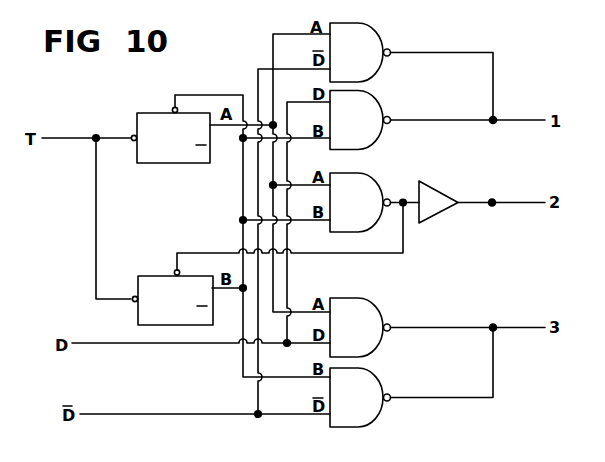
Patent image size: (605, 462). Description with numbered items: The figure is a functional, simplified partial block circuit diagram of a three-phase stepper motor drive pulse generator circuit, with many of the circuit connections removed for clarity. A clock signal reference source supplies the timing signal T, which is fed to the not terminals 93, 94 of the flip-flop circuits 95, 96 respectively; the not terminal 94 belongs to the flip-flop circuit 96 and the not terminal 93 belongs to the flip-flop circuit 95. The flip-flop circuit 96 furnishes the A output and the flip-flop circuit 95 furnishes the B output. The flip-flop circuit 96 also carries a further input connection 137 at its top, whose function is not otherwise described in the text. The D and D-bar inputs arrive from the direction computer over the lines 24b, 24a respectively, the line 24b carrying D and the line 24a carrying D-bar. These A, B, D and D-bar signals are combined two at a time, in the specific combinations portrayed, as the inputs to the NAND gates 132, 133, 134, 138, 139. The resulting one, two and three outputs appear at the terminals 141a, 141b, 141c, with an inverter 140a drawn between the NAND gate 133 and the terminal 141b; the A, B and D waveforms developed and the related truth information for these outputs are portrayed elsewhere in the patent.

The NAND gate 132 is at (372, 29).
The NAND gate 138 is at (371, 95).
The NAND gate 133 is at (372, 181).
The NAND gate 134 is at (372, 306).
The NAND gate 139 is at (372, 373).
The flip-flop circuit 96 is at (181, 147).
The flip-flop circuit 95 is at (183, 307).
The not terminal 94 is at (132, 136).
The input of flip-flop 96 137 is at (172, 109).
The not terminal 93 is at (133, 296).
The inverter 140a is at (441, 212).
The terminal 141a is at (491, 117).
The terminal 141b is at (491, 199).
The terminal 141c is at (490, 323).
The line 24a is at (127, 413).
The line 24b is at (125, 345).